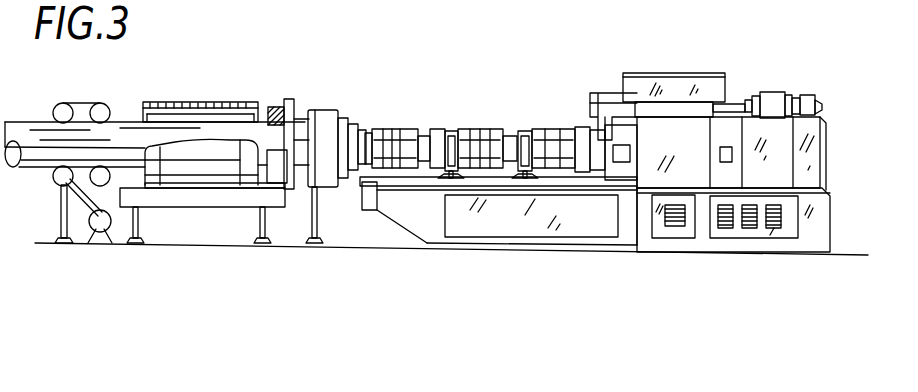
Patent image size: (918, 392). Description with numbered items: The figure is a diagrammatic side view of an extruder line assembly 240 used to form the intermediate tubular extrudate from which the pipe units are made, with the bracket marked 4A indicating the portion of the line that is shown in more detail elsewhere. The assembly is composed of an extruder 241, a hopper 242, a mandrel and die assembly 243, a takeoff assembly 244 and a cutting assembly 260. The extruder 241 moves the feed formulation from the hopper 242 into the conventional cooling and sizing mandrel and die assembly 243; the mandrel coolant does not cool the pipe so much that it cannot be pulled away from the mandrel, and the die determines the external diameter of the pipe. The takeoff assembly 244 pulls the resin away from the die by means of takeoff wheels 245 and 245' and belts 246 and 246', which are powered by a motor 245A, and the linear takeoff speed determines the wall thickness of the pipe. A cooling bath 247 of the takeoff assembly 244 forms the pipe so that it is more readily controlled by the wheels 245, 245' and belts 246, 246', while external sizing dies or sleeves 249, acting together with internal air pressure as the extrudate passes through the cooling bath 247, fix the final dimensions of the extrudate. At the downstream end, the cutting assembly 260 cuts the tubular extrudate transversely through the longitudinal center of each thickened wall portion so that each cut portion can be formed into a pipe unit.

The extruder line assembly 240 is at (436, 173).
The extruder 241 is at (501, 139).
The hopper 242 is at (625, 86).
The mandrel and die assembly 243 is at (351, 140).
The takeoff assembly 244 is at (157, 165).
The takeoff wheel 245 is at (42, 204).
The takeoff wheel 245' is at (75, 97).
The motor 245A is at (98, 229).
The belt 246 is at (66, 194).
The belt 246' is at (102, 97).
The cooling bath 247 is at (231, 94).
The external sizing dies or sleeves 249 is at (268, 108).
The cutting assembly 260 is at (40, 118).
The portion shown in FIG. 4A is at (306, 268).